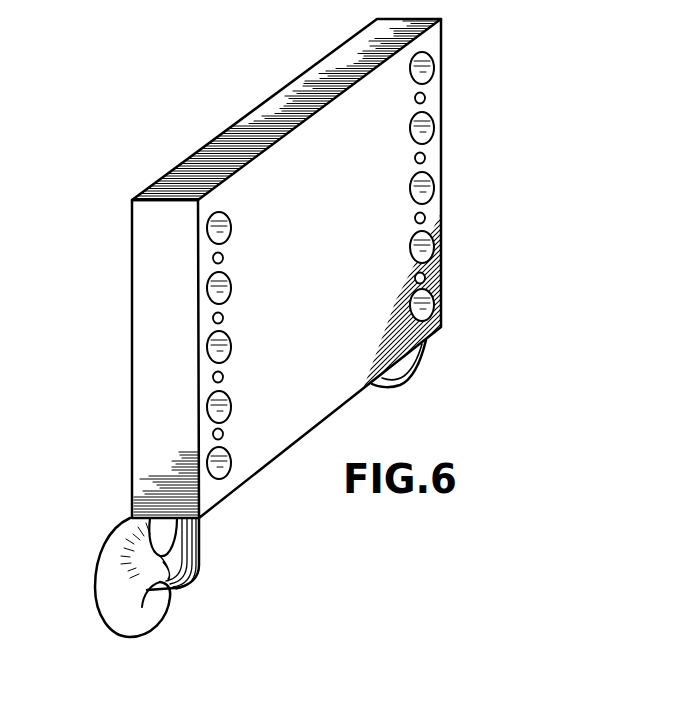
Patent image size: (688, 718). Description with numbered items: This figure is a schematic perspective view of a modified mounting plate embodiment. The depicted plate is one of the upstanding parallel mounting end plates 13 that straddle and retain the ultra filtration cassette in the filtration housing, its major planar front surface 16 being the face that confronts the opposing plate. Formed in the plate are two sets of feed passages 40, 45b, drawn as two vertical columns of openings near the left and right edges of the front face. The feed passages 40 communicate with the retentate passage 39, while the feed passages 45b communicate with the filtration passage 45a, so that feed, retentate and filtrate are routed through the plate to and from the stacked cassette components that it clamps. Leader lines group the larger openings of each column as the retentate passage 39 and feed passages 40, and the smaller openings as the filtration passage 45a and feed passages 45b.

The second upstanding mounting end plate 13 is at (204, 86).
The major planar surface 16 is at (317, 242).
The retentate passage 39 is at (207, 229).
The feed passage 40 is at (433, 68).
The filtration passage 45a is at (224, 258).
The feed passage 45b is at (415, 277).